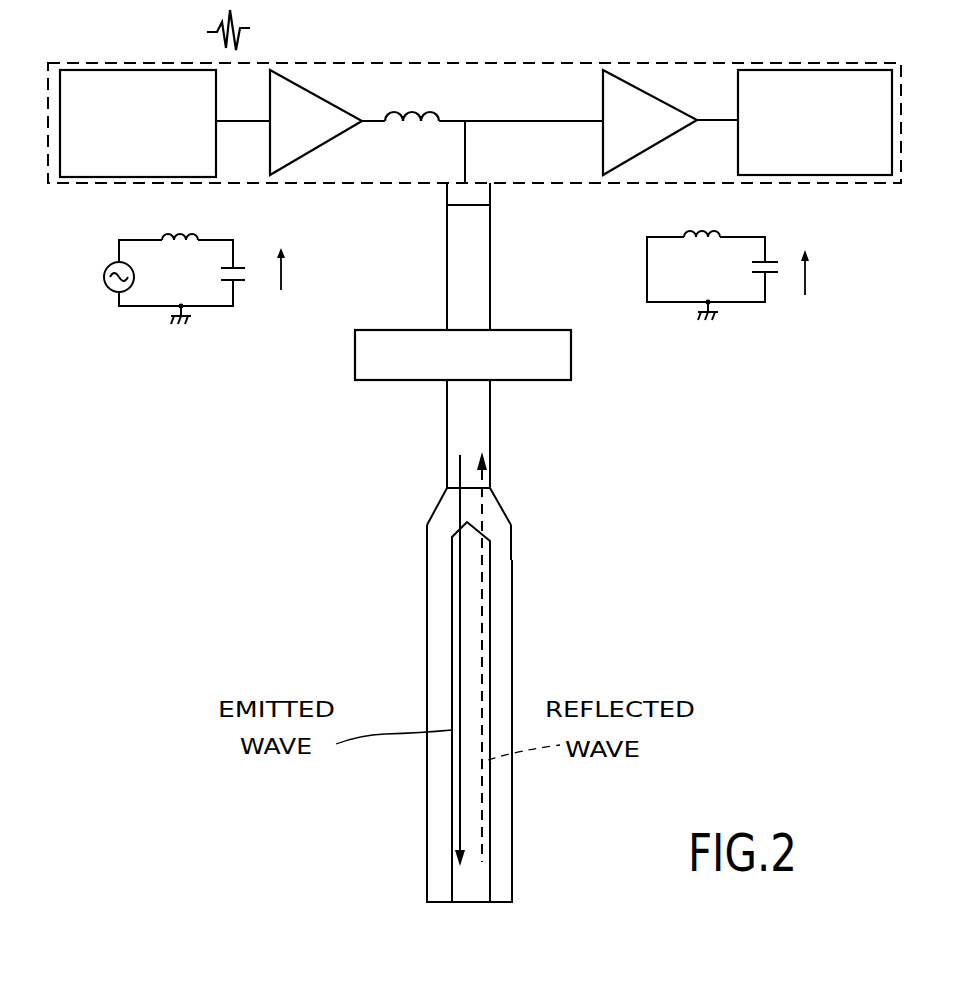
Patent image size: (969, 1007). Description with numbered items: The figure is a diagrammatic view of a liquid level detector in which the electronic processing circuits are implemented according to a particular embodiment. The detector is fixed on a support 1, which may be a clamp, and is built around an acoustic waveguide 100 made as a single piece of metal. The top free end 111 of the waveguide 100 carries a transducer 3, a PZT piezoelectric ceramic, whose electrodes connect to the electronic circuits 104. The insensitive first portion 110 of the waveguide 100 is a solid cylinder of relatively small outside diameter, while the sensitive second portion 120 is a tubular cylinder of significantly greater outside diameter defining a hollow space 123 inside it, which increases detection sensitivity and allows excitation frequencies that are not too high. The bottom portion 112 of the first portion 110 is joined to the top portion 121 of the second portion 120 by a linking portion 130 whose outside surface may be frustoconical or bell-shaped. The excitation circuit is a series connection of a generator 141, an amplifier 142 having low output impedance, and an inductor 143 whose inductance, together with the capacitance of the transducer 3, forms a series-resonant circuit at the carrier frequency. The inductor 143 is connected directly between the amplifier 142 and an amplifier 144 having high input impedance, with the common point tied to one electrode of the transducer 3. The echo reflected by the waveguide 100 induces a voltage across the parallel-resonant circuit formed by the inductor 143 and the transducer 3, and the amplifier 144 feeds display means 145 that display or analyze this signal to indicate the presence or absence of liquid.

The support 1 is at (568, 358).
The transducer 3 is at (448, 195).
The acoustic waveguide 100 is at (410, 545).
The measuring circuit 104 is at (63, 186).
The insensitive first portion 110 is at (441, 434).
The top free end 111 is at (492, 203).
The bottom portion of the first portion 112 is at (492, 488).
The sensitive second portion 120 is at (430, 665).
The top portion of the second portion 121 is at (514, 522).
The hollow space 123 is at (485, 625).
The linking portion 130 is at (506, 516).
The generator 141 is at (103, 76).
The amplifier having low output impedance 142 is at (310, 92).
The inductor 143 is at (425, 106).
The amplifier having high input impedance 144 is at (630, 82).
The display means 145 is at (786, 70).